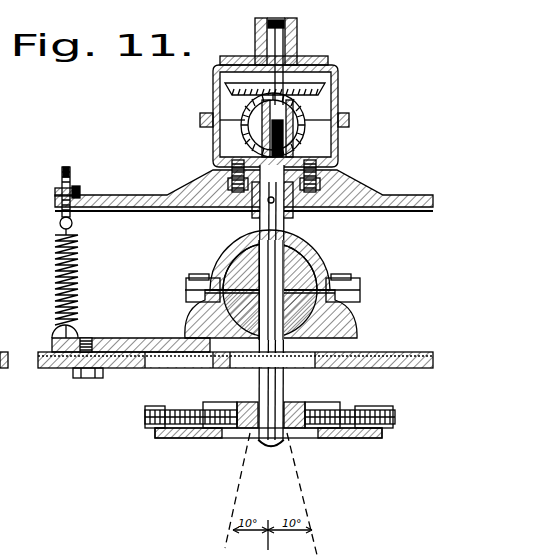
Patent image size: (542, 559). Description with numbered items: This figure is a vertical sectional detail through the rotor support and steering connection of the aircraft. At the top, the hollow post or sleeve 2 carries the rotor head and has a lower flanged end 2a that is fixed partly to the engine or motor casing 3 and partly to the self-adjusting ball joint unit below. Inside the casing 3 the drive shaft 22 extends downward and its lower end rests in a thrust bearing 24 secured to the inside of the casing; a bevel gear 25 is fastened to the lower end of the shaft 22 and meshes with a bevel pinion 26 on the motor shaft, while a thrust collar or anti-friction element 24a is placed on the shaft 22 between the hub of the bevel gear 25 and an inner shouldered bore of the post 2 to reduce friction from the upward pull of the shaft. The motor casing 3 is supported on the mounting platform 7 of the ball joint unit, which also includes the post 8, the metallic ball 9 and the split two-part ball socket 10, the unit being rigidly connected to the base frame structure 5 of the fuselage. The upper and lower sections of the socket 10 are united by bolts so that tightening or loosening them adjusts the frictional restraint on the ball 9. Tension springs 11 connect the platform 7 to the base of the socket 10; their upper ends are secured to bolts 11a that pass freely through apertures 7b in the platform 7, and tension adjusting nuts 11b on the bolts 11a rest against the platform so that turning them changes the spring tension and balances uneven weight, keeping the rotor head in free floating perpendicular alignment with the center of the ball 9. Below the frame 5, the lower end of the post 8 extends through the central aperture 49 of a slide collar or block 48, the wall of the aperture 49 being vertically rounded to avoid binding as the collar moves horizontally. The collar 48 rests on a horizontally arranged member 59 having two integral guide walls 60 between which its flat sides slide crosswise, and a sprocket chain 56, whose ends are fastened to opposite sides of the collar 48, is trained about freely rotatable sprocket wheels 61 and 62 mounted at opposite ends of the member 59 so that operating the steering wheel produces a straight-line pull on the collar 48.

The hollow post or sleeve 2 is at (255, 28).
The drive shaft 22 is at (297, 25).
The thrust collar or anti-friction element 24a is at (270, 58).
The lower flanged end 2a is at (328, 60).
The engine or motor casing 3 is at (213, 98).
The bevel gear 25 is at (330, 90).
The bevel pinion 26 is at (305, 120).
The thrust bearing 24 is at (300, 152).
The mounting platform 7 is at (140, 195).
The apertures 7b is at (55, 200).
The bolts 11a is at (66, 167).
The tension adjusting nuts 11b is at (56, 188).
The tension springs 11 is at (78, 270).
The metallic ball 9 is at (245, 265).
The post 8 is at (285, 220).
The split or two-part ball socket 10 is at (343, 322).
The base frame structure 5 is at (405, 365).
The sprocket wheel 62 is at (172, 410).
The guide walls 60 is at (226, 402).
The slide collar or block 48 is at (305, 404).
The sprocket wheel 61 is at (378, 410).
The horizontally arranged member 59 is at (196, 440).
The sprocket chain 56 is at (328, 440).
The central aperture 49 is at (285, 445).